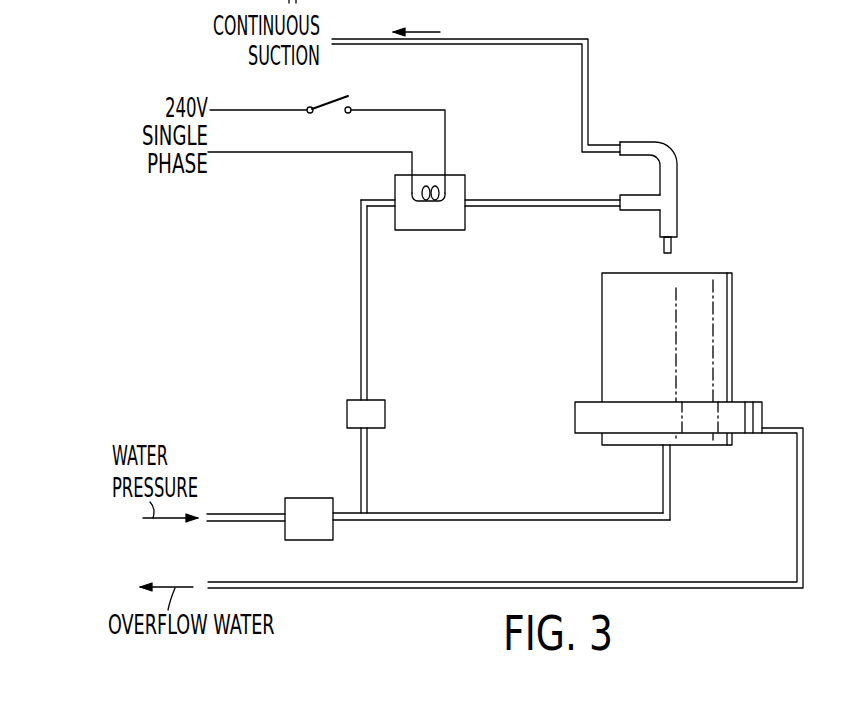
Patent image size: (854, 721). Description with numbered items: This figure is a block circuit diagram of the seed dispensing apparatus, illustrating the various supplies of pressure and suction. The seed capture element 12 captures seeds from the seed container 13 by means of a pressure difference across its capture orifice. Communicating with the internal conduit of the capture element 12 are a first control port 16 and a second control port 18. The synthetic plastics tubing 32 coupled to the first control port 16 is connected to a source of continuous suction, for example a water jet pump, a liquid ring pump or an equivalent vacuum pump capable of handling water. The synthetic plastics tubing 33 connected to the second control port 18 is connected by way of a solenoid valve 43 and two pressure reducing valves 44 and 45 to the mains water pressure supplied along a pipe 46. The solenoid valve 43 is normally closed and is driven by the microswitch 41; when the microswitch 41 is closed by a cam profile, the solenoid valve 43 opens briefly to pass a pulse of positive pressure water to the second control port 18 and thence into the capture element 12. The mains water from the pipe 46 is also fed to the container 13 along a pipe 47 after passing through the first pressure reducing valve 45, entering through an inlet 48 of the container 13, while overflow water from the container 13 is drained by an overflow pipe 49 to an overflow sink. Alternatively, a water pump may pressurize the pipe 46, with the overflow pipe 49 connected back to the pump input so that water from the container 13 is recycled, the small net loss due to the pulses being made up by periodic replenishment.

The seed capture element 12 is at (672, 248).
The seed container 13 is at (742, 283).
The first control port 16 is at (630, 138).
The second control port 18 is at (632, 193).
The synthetic plastics tubing 32 is at (590, 87).
The synthetic plastics tubing 33 is at (566, 200).
The microswitch 41 is at (333, 93).
The solenoid valve 43 is at (467, 185).
The pressure reducing valve 44 is at (347, 413).
The first pressure reducing valve 45 is at (313, 498).
The pipe 46 is at (268, 523).
The pipe 47 is at (483, 513).
The inlet 48 is at (662, 470).
The overflow pipe 49 is at (793, 472).